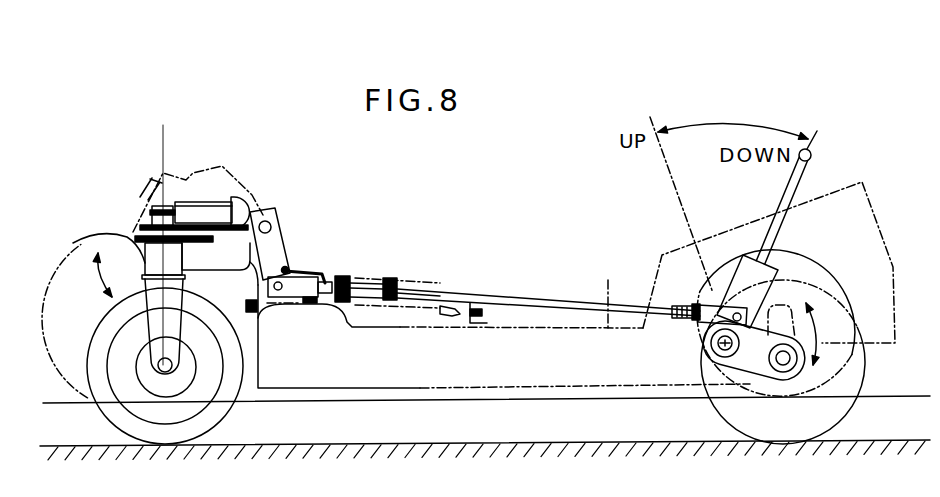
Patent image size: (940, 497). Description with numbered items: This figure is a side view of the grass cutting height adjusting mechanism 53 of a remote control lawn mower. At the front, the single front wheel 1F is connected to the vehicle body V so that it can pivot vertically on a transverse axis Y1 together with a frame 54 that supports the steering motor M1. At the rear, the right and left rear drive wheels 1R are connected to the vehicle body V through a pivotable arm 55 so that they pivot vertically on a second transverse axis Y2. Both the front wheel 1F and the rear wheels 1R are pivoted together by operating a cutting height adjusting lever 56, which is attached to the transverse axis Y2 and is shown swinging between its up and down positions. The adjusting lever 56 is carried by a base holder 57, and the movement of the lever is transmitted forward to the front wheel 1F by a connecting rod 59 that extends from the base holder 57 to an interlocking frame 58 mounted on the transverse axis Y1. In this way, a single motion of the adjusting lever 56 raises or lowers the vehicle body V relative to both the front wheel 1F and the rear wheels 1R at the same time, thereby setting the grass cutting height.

The front wheel 1F is at (108, 420).
The rear drive wheels 1R is at (848, 414).
The frame 54 is at (118, 235).
The steering motor M1 is at (232, 183).
The transverse axis Y1 is at (271, 206).
The interlocking frame 58 is at (283, 247).
The grass cutting height adjusting mechanism 53 is at (430, 240).
The connecting rod 59 is at (526, 289).
The vehicle body V is at (607, 291).
The base holder 57 is at (740, 268).
The cutting height adjusting lever 56 is at (811, 155).
The pivotable arm 55 is at (780, 381).
The transverse axis Y2 is at (720, 344).